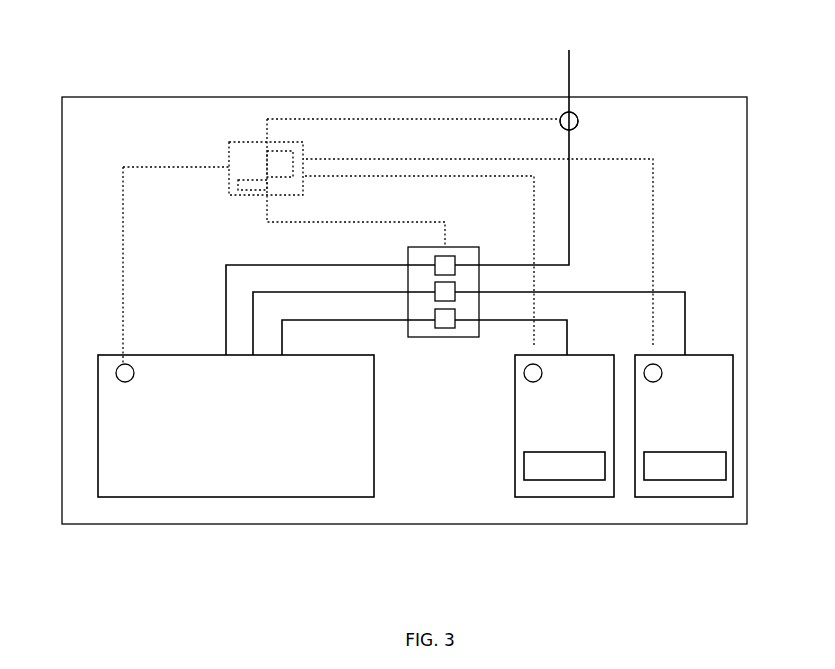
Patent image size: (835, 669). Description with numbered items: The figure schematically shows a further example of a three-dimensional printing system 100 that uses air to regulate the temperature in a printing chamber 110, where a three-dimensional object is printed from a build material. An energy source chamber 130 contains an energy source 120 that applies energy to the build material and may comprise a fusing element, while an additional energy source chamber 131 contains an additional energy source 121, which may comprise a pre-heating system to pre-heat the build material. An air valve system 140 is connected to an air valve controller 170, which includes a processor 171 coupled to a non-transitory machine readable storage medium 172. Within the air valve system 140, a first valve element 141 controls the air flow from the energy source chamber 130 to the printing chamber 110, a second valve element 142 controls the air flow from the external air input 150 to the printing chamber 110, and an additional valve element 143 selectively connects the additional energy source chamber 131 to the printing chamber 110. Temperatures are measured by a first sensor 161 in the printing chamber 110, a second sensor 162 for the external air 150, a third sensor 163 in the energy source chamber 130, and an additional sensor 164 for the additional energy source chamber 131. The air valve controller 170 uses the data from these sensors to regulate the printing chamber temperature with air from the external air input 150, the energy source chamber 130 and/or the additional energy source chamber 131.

The 3D printing system 100 is at (107, 97).
The 3D printing chamber 110 is at (98, 437).
The energy source 120 is at (693, 480).
The additional energy source 121 is at (560, 483).
The energy source chamber 130 is at (733, 425).
The additional energy source chamber 131 is at (577, 497).
The air valve system 140 is at (418, 247).
The first valve element 141 is at (455, 298).
The second valve element 142 is at (455, 247).
The additional valve element 143 is at (443, 330).
The external air input 150 is at (573, 51).
The first sensor 161 is at (116, 368).
The second sensor 162 is at (578, 122).
The third sensor 163 is at (658, 380).
The additional sensor 164 is at (524, 379).
The air valve controller 170 is at (252, 142).
The processor 171 is at (289, 151).
The non-transitory machine readable storage medium 172 is at (246, 192).